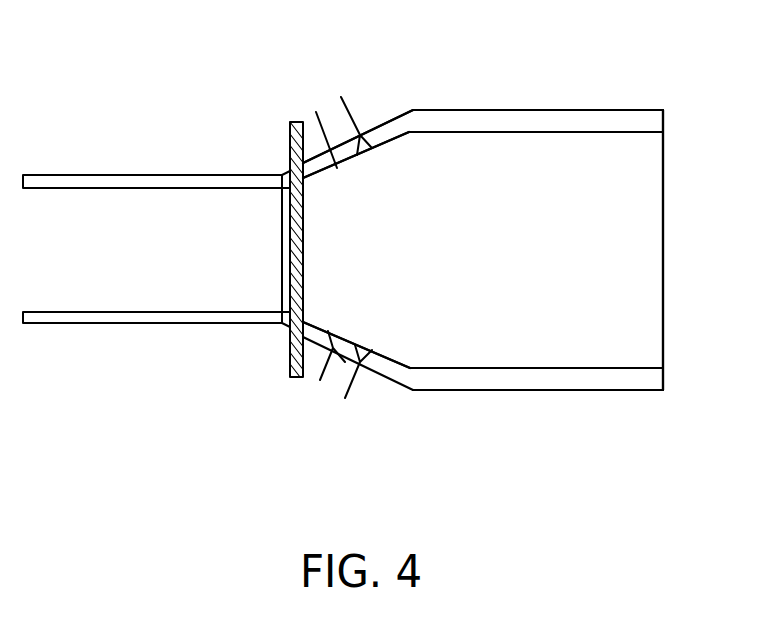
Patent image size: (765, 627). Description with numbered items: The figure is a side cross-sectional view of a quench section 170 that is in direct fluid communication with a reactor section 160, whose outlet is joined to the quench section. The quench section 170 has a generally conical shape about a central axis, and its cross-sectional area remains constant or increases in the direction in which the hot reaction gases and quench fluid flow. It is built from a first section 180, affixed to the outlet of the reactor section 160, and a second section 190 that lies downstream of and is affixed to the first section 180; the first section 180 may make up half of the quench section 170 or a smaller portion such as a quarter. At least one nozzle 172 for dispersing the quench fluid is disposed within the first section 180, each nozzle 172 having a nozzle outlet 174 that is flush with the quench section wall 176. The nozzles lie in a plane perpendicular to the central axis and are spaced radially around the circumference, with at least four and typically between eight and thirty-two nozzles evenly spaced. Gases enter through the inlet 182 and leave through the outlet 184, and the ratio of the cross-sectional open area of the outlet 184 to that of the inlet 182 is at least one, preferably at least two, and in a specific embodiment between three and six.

The reactor section 160 is at (177, 325).
The quench section 170 is at (663, 452).
The nozzle 172 is at (317, 111).
The nozzle outlet 174 is at (335, 155).
The quench section wall 176 is at (403, 135).
The first section 180 is at (370, 345).
The inlet 182 is at (306, 248).
The outlet 184 is at (664, 249).
The second section 190 is at (525, 367).